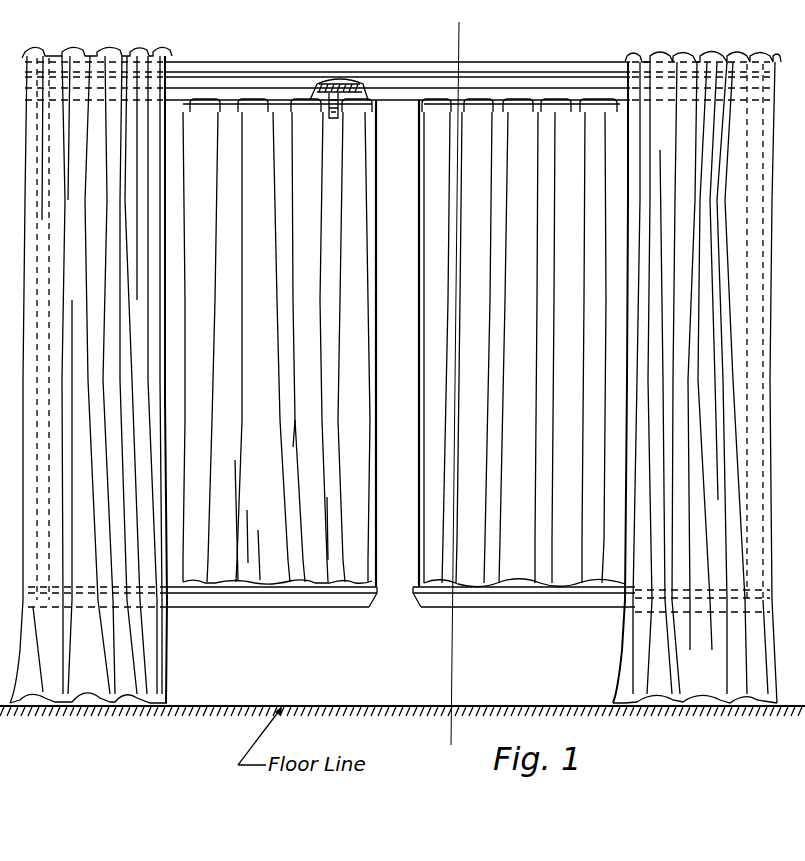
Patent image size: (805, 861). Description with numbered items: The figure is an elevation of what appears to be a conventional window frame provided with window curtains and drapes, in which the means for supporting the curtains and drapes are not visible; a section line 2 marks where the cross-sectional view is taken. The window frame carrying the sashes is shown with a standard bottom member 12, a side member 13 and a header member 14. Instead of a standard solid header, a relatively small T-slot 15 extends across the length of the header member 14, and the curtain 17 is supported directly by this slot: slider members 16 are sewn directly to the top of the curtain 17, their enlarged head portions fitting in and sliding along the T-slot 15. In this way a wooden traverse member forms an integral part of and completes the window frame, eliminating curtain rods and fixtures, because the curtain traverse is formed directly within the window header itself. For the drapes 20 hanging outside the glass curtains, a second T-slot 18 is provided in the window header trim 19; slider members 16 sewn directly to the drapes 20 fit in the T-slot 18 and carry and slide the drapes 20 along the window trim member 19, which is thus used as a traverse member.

The section line 2- 2 is at (492, 39).
The bottom member 12 is at (265, 606).
The side member 13 is at (397, 343).
The header member 14 is at (298, 93).
The T-slot 15 is at (354, 82).
The slider members 16 is at (331, 92).
The curtain 17 is at (404, 349).
The T-slot 18 is at (572, 73).
The window header trim 19 is at (610, 58).
The drapes 20 is at (178, 34).